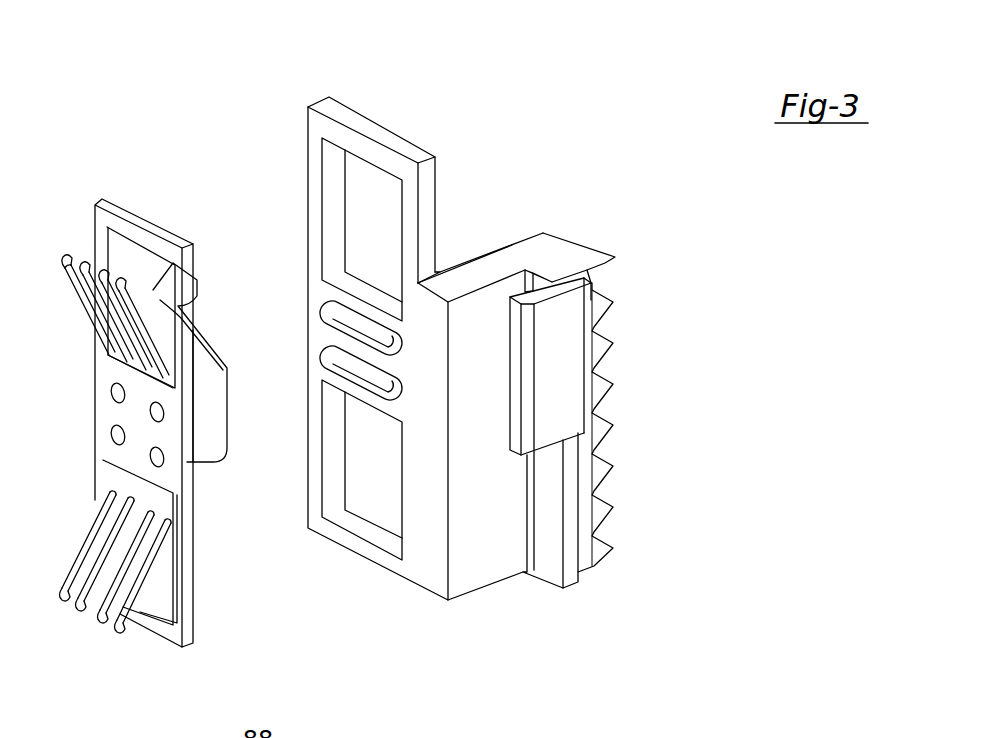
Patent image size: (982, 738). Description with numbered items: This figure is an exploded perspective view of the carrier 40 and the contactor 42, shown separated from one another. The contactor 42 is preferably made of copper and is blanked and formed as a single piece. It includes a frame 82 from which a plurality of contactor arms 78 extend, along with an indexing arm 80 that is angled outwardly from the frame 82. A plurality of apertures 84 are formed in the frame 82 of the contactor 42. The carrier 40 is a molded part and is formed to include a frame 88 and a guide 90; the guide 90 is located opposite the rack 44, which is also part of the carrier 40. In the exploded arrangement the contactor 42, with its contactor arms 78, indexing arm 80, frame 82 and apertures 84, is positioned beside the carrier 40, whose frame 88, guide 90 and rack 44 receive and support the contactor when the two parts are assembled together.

The carrier 40 is at (486, 339).
The contactor 42 is at (161, 418).
The rack 44 is at (597, 291).
The contactor arms 78 is at (121, 277).
The indexing arm 80 is at (192, 312).
The frame 82 is at (193, 470).
The apertures 84 is at (151, 456).
The frame 88 is at (308, 146).
The guide 90 is at (521, 283).